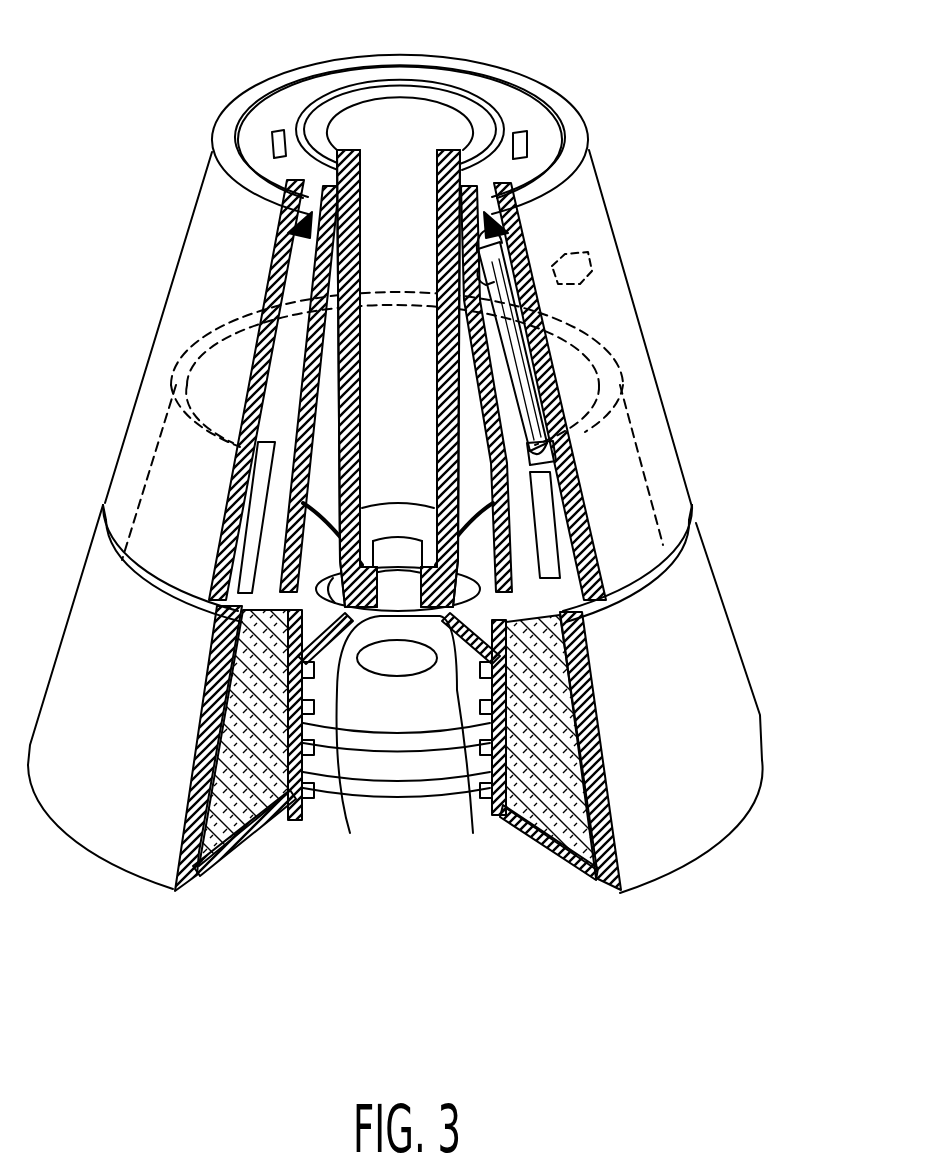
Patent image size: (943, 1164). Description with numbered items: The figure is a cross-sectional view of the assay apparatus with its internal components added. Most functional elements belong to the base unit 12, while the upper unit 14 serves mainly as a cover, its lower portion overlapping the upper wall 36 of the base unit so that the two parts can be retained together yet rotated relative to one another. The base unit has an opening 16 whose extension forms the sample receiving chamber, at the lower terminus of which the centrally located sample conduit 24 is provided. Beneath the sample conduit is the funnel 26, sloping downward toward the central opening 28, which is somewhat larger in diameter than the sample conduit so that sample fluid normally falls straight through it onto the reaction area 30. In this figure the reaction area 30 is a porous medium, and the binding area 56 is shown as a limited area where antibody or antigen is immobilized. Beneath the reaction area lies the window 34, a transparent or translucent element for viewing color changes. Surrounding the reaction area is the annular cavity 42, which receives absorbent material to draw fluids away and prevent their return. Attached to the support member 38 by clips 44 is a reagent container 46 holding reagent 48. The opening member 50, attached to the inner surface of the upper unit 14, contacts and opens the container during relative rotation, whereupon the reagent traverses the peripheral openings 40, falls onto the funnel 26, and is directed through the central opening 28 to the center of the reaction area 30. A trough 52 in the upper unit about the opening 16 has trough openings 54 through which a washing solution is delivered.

The base unit 12 is at (725, 700).
The upper unit 14 is at (212, 183).
The opening 16 is at (413, 120).
The sample conduit 24 is at (398, 560).
The funnel 26 is at (484, 700).
The central opening 28 is at (338, 603).
The reaction area 30 is at (437, 713).
The window 34 is at (396, 790).
The upper wall 36 is at (195, 348).
The support member 38 is at (512, 362).
The peripheral openings 40 is at (540, 604).
The annular cavity 42 is at (258, 820).
The clips 44 is at (517, 232).
The reagent container 46 is at (505, 252).
The reagent 48 is at (542, 340).
The opening member 50 is at (572, 257).
The trough 52 is at (314, 90).
The trough openings 54 is at (282, 133).
The binding area 56 is at (350, 833).